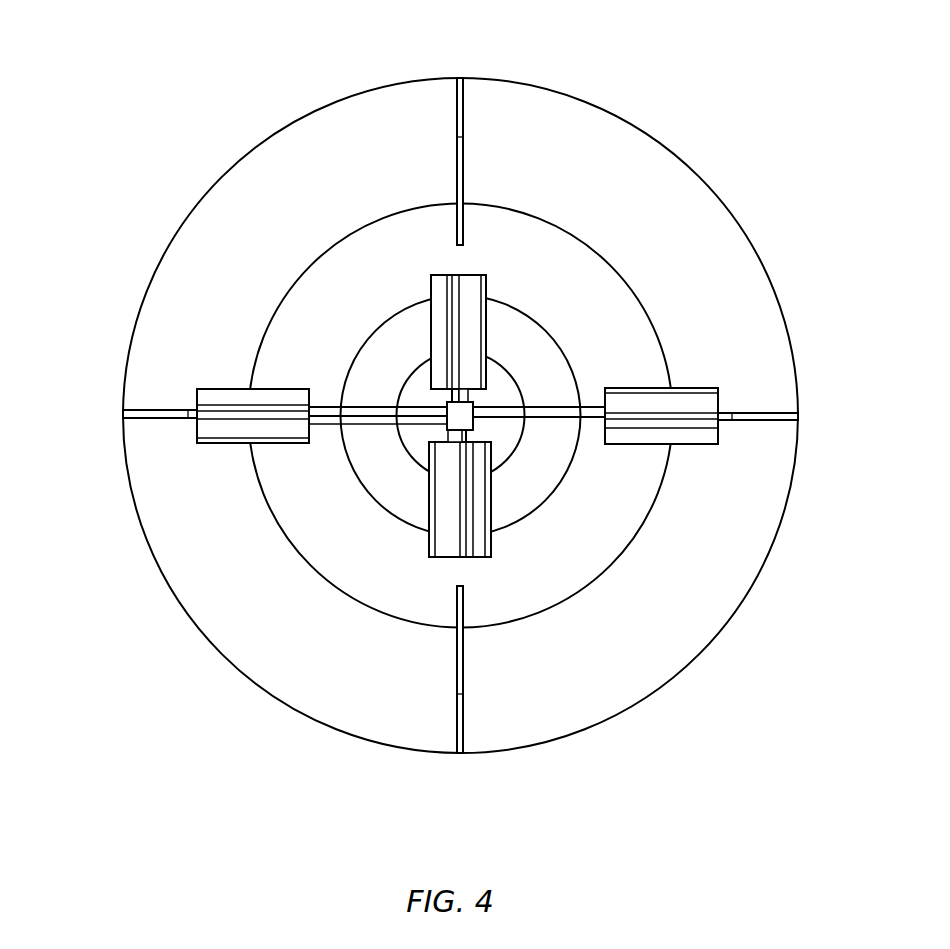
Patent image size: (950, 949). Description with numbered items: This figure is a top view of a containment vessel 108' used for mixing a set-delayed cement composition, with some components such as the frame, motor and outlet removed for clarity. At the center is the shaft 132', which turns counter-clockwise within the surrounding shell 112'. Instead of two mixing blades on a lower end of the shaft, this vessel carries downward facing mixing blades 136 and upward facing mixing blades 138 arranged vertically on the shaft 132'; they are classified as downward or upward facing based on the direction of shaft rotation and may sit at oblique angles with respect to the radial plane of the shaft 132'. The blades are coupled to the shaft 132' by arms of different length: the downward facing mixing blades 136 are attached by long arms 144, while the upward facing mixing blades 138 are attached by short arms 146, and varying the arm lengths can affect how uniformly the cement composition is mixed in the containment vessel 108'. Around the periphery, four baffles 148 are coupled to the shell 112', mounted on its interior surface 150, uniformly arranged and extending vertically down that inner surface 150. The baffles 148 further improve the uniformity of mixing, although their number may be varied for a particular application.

The containment vessel 108' is at (452, 384).
The shell 112' is at (460, 415).
The interior surface 150 is at (191, 216).
The long arms 144 is at (372, 405).
The baffles 148 is at (455, 149).
The downward facing mixing blades 136 is at (232, 389).
The upward facing mixing blades 138 is at (487, 290).
The short arms 146 is at (470, 397).
The shaft 132' is at (387, 461).